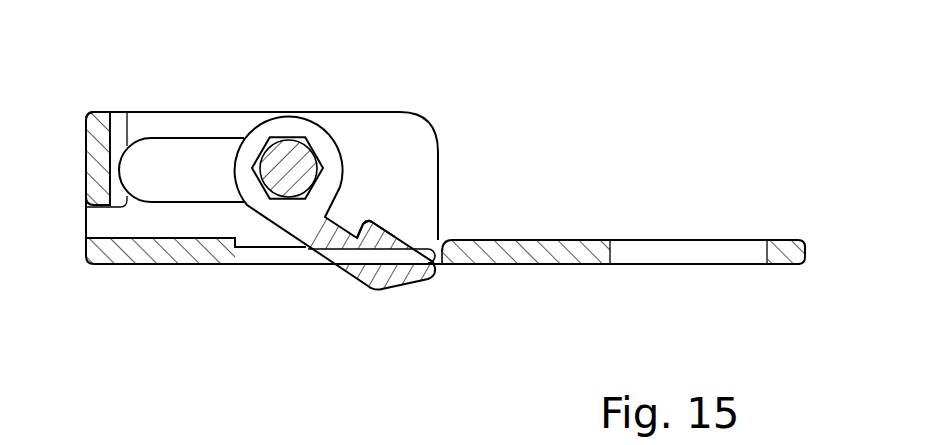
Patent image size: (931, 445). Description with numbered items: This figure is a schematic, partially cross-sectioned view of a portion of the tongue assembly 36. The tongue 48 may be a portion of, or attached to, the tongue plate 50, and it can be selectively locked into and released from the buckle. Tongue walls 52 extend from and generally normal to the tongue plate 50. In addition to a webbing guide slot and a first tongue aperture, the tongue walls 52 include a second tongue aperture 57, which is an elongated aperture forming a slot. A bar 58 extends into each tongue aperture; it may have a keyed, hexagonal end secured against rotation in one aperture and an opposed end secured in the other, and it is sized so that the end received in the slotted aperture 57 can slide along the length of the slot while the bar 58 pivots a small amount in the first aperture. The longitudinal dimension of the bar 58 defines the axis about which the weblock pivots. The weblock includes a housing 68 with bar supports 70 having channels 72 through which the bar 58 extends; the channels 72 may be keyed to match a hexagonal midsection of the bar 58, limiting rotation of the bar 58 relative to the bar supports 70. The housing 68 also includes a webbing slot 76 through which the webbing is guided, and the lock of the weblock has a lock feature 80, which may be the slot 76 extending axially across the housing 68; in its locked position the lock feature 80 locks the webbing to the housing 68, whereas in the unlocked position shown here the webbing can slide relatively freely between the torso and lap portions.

The tongue assembly 36 is at (589, 144).
The tongue 48 is at (780, 240).
The tongue plate 50 is at (130, 265).
The tongue walls 52 is at (422, 123).
The second tongue aperture 57 is at (182, 138).
The bar 58 is at (298, 137).
The housing 68 is at (393, 287).
The bar supports 70 is at (252, 128).
The channels 72 is at (277, 200).
The webbing slot 76 is at (387, 237).
The lock feature 80 is at (443, 240).